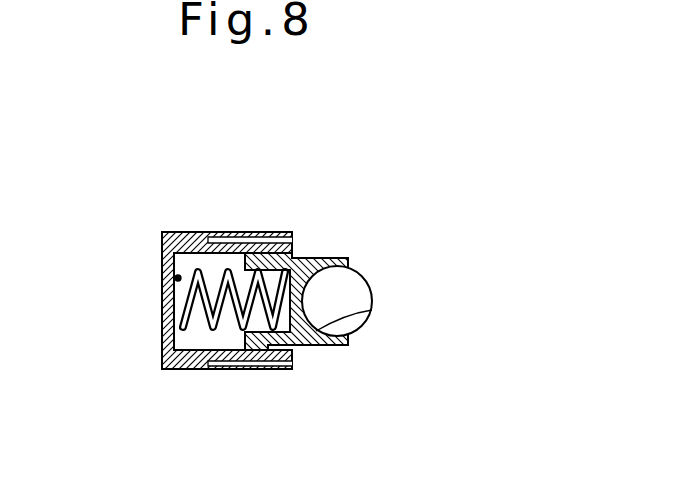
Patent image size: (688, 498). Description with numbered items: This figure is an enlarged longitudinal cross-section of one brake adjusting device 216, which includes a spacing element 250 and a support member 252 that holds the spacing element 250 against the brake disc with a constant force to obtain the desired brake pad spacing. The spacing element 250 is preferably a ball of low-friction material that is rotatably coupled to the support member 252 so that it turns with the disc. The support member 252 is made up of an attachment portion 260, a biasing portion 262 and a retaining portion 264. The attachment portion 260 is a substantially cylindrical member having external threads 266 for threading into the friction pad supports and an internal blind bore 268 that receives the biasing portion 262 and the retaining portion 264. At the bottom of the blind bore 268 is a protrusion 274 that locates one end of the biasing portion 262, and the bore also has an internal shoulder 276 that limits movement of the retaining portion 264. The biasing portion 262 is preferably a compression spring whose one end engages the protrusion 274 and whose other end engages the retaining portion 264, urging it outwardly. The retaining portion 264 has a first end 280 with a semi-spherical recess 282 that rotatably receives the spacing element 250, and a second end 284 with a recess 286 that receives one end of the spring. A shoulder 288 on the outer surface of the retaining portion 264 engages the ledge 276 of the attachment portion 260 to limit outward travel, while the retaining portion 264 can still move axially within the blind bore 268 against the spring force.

The brake adjusting device 216 is at (283, 306).
The spacing element 250 is at (390, 288).
The support member 252 is at (253, 372).
The attachment portion 260 is at (226, 325).
The biasing portion 262 is at (245, 257).
The retaining portion 264 is at (301, 287).
The external threads 266 is at (278, 253).
The internal blind bore 268 is at (172, 349).
The protrusion 274 is at (177, 281).
The internal shoulder 276 is at (270, 255).
The first end 280 is at (348, 344).
The semi-spherical recess 282 is at (372, 311).
The second end 284 is at (207, 352).
The recess 286 is at (258, 257).
The shoulder 288 is at (163, 233).